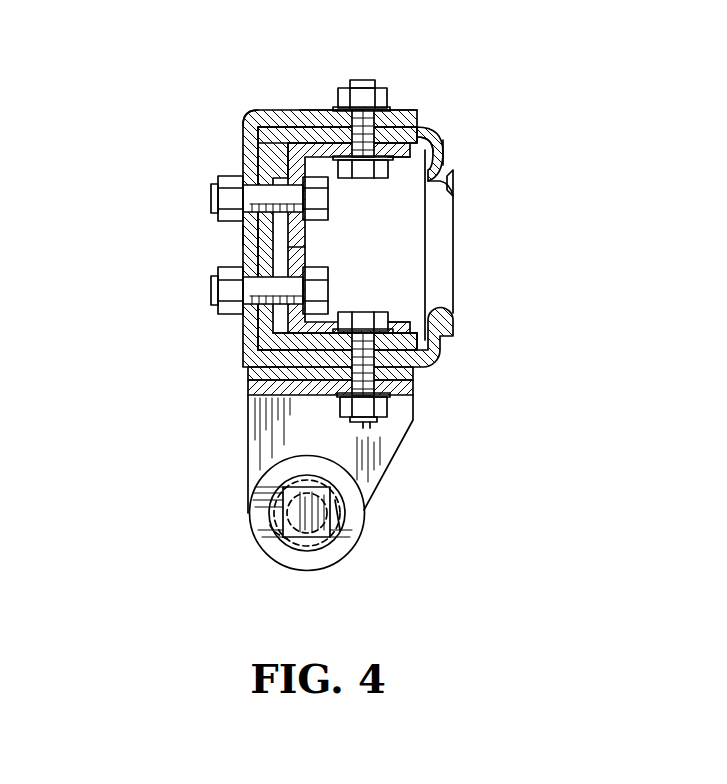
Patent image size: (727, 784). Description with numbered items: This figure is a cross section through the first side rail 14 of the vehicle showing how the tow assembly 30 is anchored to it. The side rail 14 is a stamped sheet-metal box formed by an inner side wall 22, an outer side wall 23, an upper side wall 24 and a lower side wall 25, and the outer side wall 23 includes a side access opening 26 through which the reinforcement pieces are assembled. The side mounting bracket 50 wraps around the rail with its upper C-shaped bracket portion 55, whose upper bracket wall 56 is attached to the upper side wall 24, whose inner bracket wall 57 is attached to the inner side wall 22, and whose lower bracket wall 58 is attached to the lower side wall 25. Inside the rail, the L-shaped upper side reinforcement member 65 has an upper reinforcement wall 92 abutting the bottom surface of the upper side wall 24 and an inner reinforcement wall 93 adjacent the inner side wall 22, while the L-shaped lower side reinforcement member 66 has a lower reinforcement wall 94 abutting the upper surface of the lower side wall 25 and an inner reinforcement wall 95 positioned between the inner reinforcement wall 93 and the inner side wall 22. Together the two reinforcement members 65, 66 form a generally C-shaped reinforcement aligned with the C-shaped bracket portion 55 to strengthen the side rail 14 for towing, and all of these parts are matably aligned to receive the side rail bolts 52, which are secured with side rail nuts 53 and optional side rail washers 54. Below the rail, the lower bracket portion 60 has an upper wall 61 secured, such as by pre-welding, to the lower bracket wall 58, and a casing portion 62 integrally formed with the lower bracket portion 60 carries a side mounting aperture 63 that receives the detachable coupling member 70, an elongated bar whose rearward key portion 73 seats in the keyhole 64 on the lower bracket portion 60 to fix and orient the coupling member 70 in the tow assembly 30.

The first side rail 14 is at (454, 126).
The inner side wall 22 is at (265, 150).
The outer side wall 23 is at (433, 163).
The upper side wall 24 is at (300, 132).
The lower side wall 25 is at (300, 357).
The side access opening 26 is at (450, 193).
The tow assembly 30 is at (240, 510).
The side mounting bracket 50 is at (236, 152).
The side rail bolt 52 is at (380, 88).
The side rail nut 53 is at (385, 100).
The side rail washer 54 is at (380, 108).
The upper C-shaped bracket portion 55 is at (245, 104).
The upper bracket wall 56 is at (340, 112).
The inner bracket wall 57 is at (250, 232).
The lower bracket wall 58 is at (400, 372).
The lower bracket portion 60 is at (240, 440).
The upper wall 61 is at (410, 387).
The casing portion 62 is at (352, 530).
The side mounting aperture 63 is at (283, 533).
The keyhole 64 is at (332, 532).
The upper side reinforcement member 65 is at (402, 166).
The lower side reinforcement member 66 is at (402, 325).
The first detachable coupling member 70 is at (291, 548).
The rearward key portion 73 is at (322, 510).
The upper reinforcement wall 92 is at (423, 150).
The inner reinforcement wall 93 is at (300, 247).
The lower reinforcement wall 94 is at (425, 342).
The inner reinforcement wall 95 is at (283, 252).